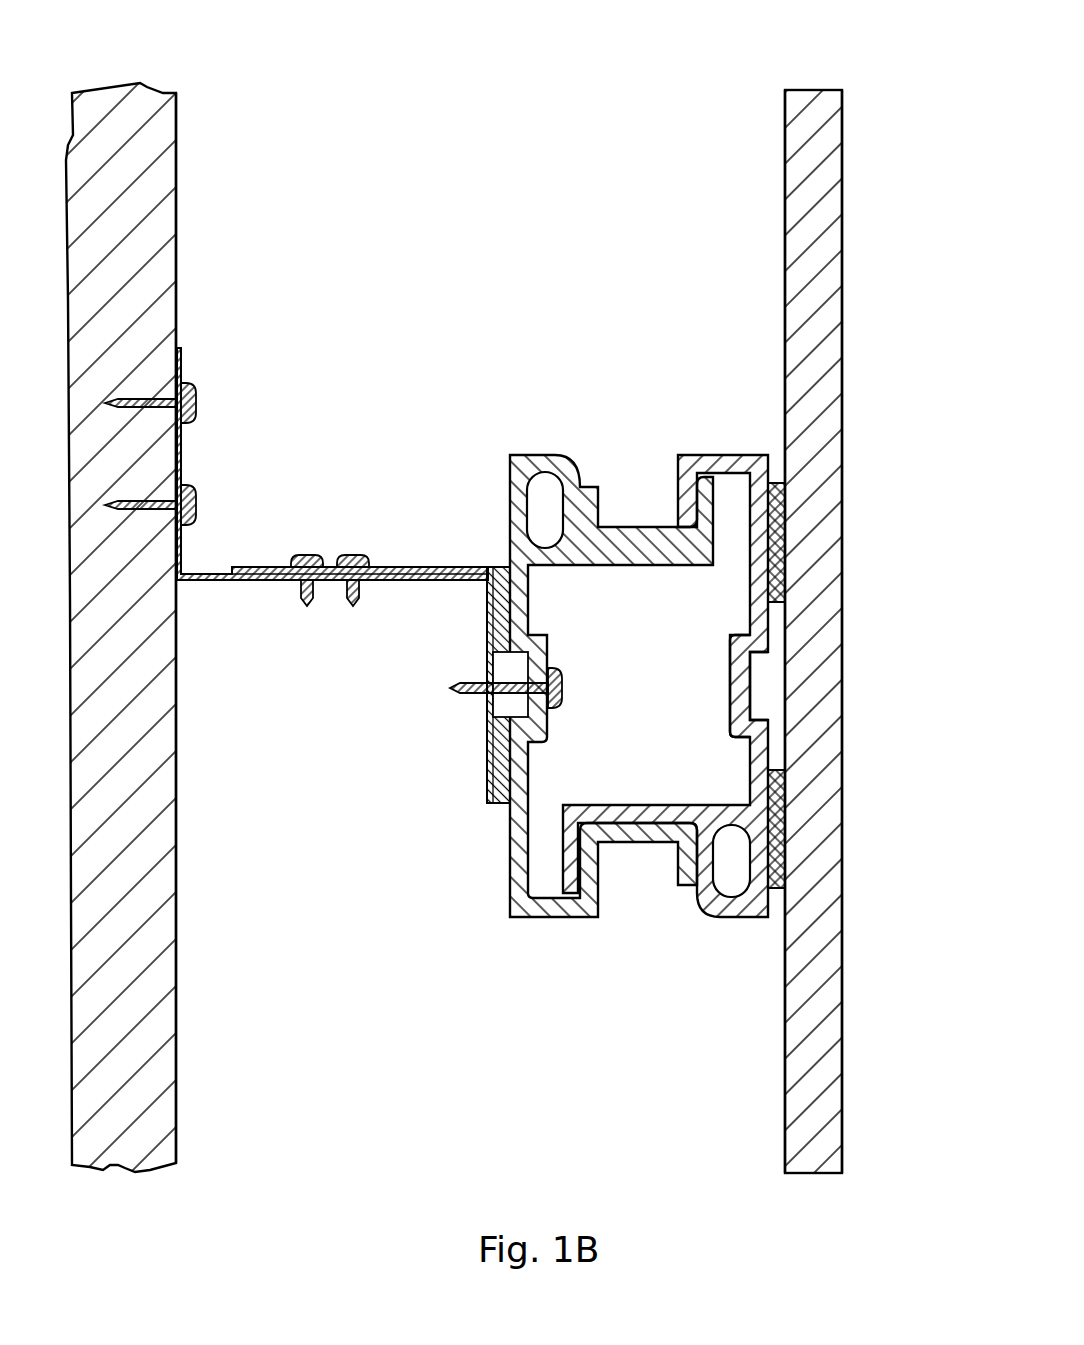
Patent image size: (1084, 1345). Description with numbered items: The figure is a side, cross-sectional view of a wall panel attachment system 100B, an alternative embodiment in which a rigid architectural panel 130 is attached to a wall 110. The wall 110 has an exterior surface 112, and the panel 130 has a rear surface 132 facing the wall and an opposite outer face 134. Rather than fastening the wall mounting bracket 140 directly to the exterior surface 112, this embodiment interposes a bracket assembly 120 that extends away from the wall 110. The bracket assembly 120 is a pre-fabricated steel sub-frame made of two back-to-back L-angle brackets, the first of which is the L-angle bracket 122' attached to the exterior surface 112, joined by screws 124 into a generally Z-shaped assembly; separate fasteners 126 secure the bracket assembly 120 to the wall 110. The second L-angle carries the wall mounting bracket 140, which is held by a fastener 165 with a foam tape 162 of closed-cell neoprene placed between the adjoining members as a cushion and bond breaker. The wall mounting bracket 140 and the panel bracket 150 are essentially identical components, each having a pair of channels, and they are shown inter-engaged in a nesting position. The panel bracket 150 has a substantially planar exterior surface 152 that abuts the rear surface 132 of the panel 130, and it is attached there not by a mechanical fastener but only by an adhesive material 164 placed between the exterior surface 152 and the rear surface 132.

The wall panel attachment system 100B is at (748, 44).
The wall 110 is at (155, 311).
The exterior surface 112 is at (177, 173).
The bracket assembly 120 is at (322, 510).
The first L-angle bracket 122' is at (242, 625).
The screws 124 is at (323, 553).
The fasteners 126 is at (197, 497).
The panel 130 is at (842, 1027).
The rear surface 132 is at (787, 133).
The panel outer surface 134 is at (842, 237).
The wall mounting bracket 140 is at (541, 455).
The panel bracket 150 is at (728, 918).
The exterior surface 152 is at (770, 618).
The foam tape 162 is at (497, 567).
The adhesive material 164 is at (785, 532).
The fastener 165 is at (565, 688).